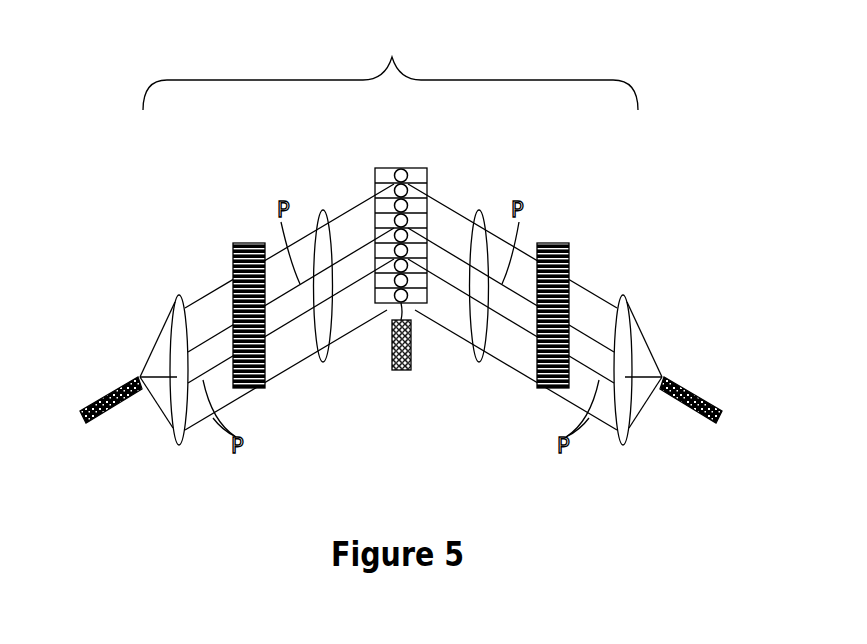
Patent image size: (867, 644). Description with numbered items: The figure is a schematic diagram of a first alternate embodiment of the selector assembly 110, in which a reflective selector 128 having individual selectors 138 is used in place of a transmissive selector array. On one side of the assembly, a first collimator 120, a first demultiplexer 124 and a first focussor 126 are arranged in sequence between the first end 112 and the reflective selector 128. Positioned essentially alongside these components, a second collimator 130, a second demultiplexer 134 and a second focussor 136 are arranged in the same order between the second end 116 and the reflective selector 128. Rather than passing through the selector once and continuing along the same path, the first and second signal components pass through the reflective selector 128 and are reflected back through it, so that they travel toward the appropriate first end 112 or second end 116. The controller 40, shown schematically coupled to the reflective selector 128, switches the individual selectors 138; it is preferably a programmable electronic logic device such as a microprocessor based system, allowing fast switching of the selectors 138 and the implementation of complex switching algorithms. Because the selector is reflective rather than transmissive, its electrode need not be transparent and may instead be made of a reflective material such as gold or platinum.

The selector assembly 110 is at (390, 70).
The first end 112 is at (140, 378).
The second end 116 is at (662, 378).
The first collimator 120 is at (178, 296).
The first demultiplexer 124 is at (248, 243).
The first focussor 126 is at (323, 362).
The reflective selector 128 is at (424, 167).
The individual selectors 138 is at (399, 169).
The controller 40 is at (401, 370).
The second collimator 130 is at (624, 296).
The second demultiplexer 134 is at (553, 243).
The second focussor 136 is at (479, 362).